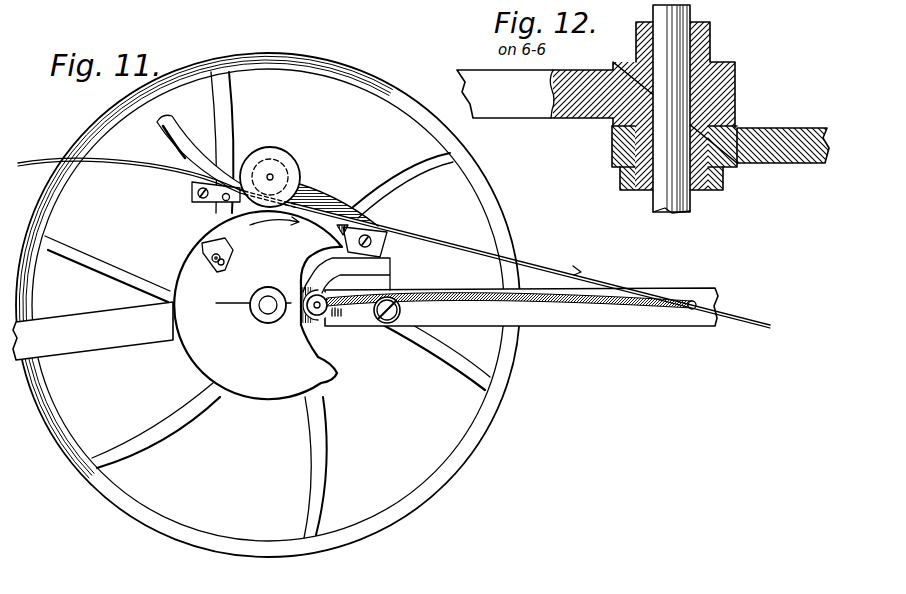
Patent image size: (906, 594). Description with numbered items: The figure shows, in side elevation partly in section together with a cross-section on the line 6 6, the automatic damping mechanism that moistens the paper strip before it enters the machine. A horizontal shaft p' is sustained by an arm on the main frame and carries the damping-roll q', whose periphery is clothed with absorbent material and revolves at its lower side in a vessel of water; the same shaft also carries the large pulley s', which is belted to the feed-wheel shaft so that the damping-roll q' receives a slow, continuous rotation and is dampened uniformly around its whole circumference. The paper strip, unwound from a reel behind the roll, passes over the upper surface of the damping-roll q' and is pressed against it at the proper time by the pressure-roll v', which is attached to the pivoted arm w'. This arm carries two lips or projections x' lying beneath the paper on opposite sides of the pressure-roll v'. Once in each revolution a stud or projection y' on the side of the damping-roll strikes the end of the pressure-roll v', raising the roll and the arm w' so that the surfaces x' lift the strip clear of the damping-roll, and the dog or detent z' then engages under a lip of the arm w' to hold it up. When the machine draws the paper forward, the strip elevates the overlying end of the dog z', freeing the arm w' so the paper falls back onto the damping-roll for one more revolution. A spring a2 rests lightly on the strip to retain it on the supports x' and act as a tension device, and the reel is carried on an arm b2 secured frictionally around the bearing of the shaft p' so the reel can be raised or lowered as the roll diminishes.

In FIG. 11, the large pulley s' is at (268, 305).
In FIG. 11, the arm b2 is at (93, 331).
In FIG. 12, the arm b2 is at (768, 136).
In FIG. 11, the damping-roll q' is at (258, 305).
In FIG. 11, the horizontal shaft p' is at (244, 316).
In FIG. 11, the section line 6 6 is at (250, 303).
In FIG. 11, the stud or projection y' is at (223, 251).
In FIG. 11, the dog or detent z' is at (509, 306).
In FIG. 11, the spring a2 is at (176, 158).
In FIG. 11, the lips or projections x' is at (287, 219).
In FIG. 11, the pivoted arm w' is at (331, 195).
In FIG. 11, the pressure-roll v' is at (280, 177).